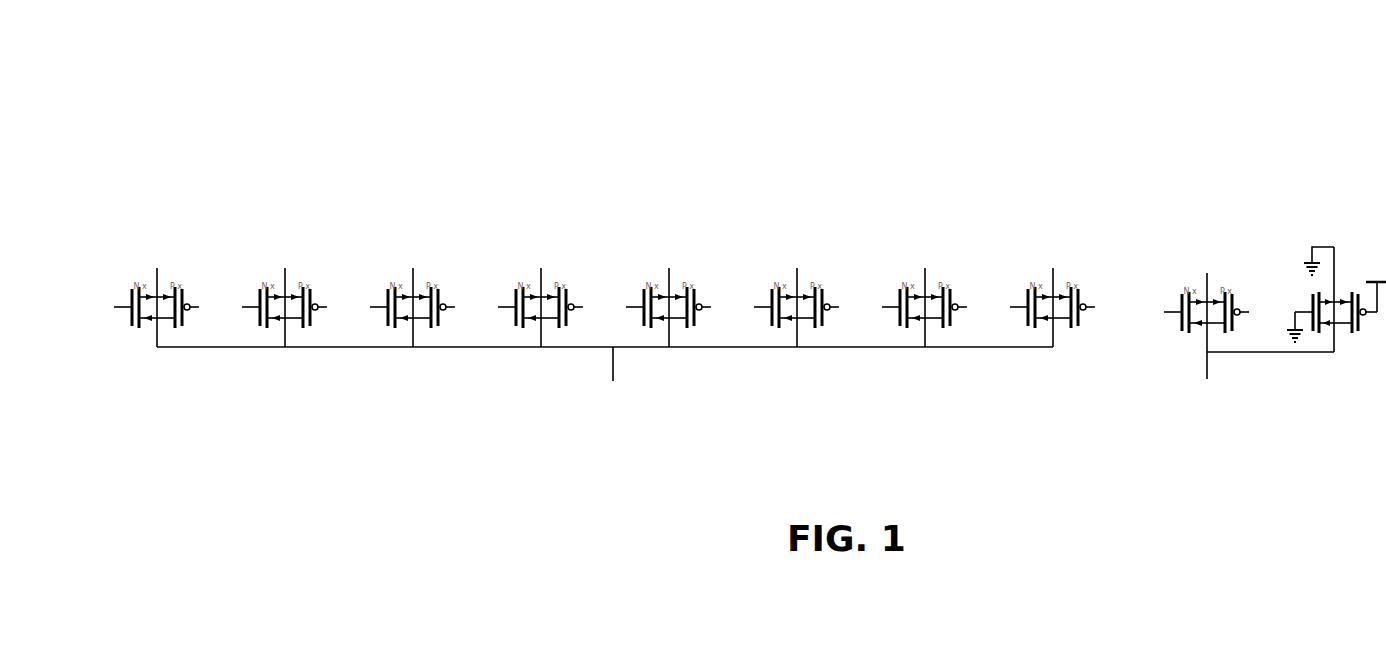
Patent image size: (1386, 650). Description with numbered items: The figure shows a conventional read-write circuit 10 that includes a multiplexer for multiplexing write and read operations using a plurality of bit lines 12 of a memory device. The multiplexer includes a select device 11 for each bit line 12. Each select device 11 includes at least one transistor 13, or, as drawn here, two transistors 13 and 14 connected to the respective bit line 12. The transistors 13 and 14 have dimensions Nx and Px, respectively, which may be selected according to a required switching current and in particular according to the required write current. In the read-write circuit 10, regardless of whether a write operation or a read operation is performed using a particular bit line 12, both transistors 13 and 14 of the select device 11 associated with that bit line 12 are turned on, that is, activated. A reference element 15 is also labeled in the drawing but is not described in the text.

The read-write circuit 10 is at (686, 128).
The select device 11 is at (122, 260).
The bit line 12 is at (165, 215).
The transistor 13 is at (133, 334).
The transistor 14 is at (177, 332).
The reference bit line BLref_P 15 is at (1207, 212).